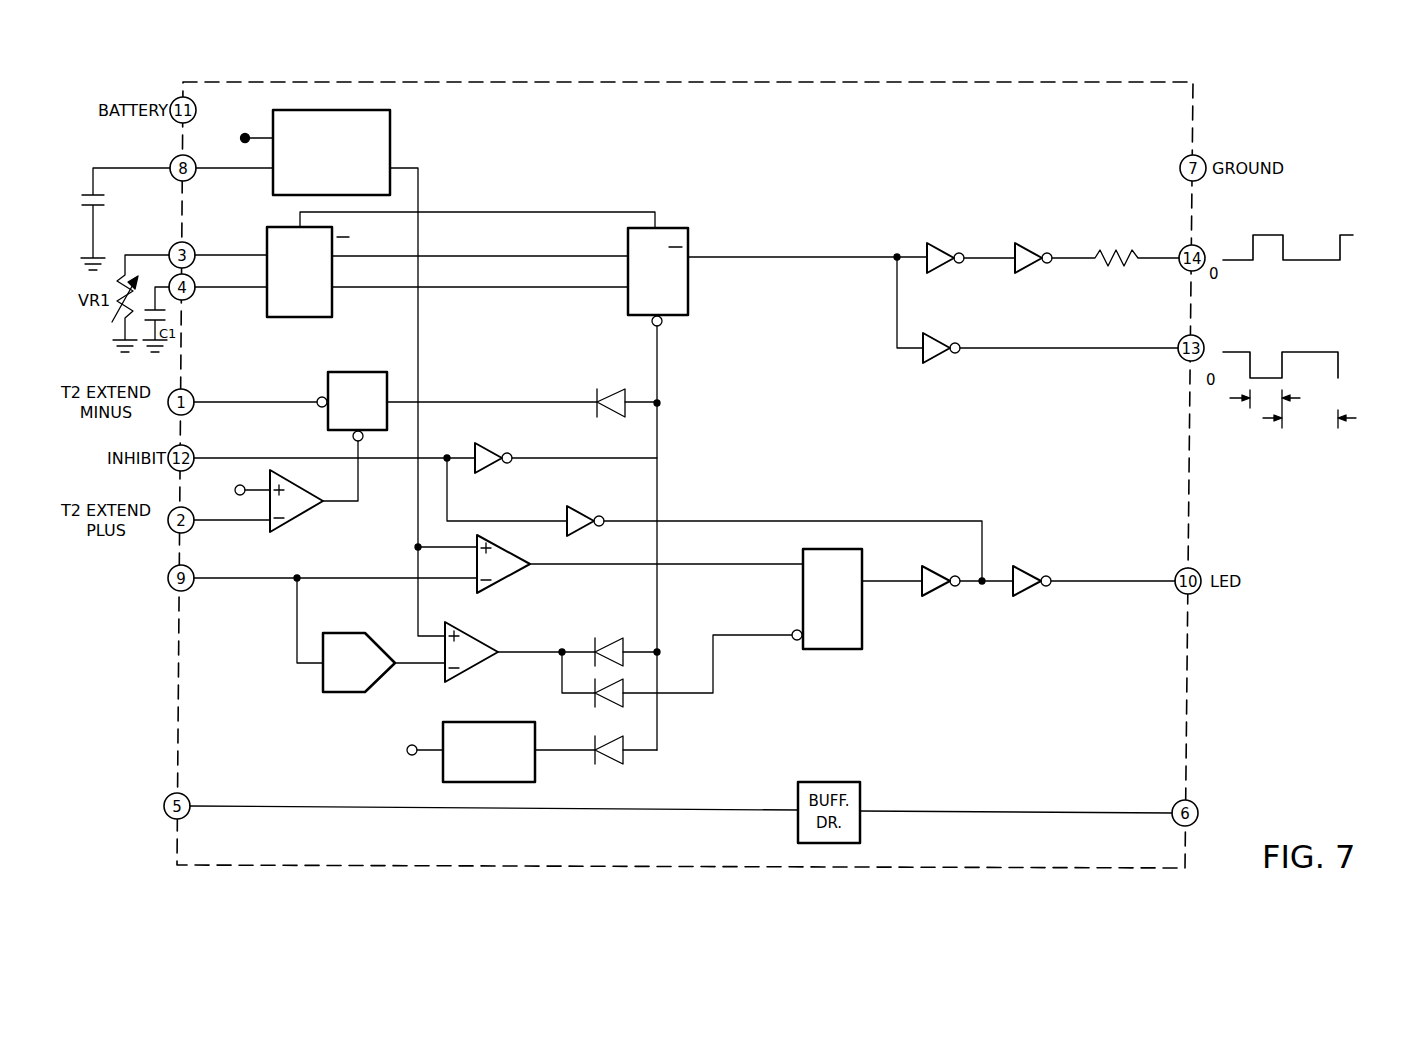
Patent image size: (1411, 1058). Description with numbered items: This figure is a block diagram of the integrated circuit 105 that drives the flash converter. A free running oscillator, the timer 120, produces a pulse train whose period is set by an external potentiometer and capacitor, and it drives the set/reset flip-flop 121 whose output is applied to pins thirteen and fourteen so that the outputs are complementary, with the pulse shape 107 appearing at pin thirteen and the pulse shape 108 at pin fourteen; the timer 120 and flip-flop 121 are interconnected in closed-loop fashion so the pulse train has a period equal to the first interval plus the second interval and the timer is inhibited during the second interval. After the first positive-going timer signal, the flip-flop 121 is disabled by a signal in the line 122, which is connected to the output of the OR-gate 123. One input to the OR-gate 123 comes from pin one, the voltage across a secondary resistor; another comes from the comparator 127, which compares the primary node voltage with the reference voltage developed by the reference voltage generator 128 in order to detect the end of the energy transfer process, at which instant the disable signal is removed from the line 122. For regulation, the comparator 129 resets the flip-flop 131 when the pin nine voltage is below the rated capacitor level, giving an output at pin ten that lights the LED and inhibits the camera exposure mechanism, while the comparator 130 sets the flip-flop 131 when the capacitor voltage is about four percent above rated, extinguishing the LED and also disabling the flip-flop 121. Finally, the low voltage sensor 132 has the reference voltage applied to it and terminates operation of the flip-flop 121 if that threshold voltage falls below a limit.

The integrated circuit 105 is at (1188, 658).
The output pulse shape at pin 13 107 is at (1340, 380).
The output pulse shape at pin 14 108 is at (1310, 262).
The free running oscillator 120 is at (285, 233).
The set/reset flip-flop 121 is at (660, 226).
The line 122 is at (658, 372).
The OR-gate 123 is at (362, 372).
The comparator 127 is at (297, 508).
The reference voltage generator 128 is at (393, 132).
The comparator 129 is at (506, 576).
The comparator 130 is at (474, 660).
The flip-flop 131 is at (862, 633).
The low voltage sensor 132 is at (537, 770).